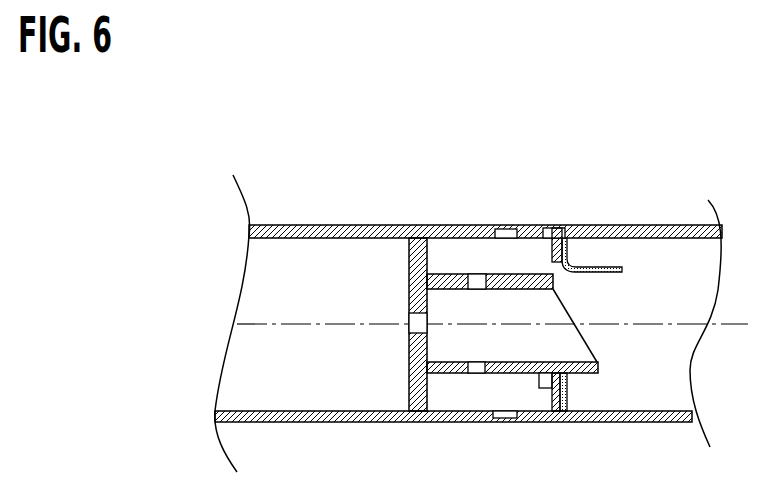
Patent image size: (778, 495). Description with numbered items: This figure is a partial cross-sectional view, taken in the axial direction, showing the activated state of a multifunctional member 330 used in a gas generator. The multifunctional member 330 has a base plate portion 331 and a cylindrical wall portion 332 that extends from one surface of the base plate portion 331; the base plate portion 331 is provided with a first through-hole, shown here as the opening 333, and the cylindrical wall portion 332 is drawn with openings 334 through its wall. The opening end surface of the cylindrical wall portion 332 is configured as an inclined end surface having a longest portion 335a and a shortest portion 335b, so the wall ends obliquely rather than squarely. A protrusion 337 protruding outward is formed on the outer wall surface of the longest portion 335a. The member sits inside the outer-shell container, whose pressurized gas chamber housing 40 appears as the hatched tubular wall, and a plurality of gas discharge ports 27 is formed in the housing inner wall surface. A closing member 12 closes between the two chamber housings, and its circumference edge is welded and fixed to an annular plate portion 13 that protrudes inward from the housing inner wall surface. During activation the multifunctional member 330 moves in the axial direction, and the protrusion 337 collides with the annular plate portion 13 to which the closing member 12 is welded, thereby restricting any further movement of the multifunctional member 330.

The closing member 12 is at (615, 253).
The annular plate portion 13 is at (542, 242).
The gas discharge ports 27 is at (500, 225).
The pressurized gas chamber housing 40 is at (641, 225).
The multifunctional member 330 is at (455, 262).
The base plate portion 331 is at (409, 391).
The cylindrical wall portion 332 is at (508, 362).
The aperture in base wall 333 is at (409, 320).
The apertures in flanges 334 is at (475, 373).
The longest portion 335a is at (597, 364).
The shortest portion 335b is at (553, 285).
The protrusion 337 is at (543, 388).